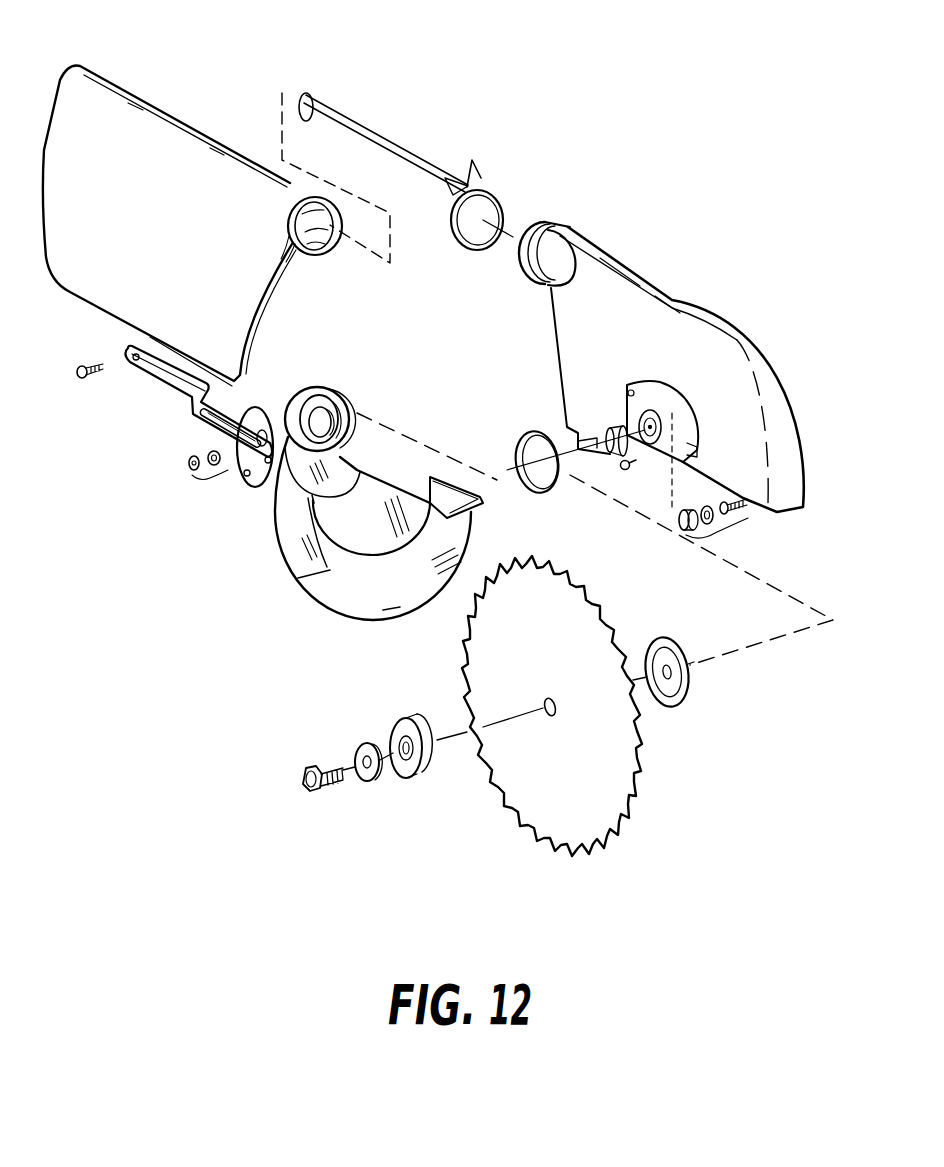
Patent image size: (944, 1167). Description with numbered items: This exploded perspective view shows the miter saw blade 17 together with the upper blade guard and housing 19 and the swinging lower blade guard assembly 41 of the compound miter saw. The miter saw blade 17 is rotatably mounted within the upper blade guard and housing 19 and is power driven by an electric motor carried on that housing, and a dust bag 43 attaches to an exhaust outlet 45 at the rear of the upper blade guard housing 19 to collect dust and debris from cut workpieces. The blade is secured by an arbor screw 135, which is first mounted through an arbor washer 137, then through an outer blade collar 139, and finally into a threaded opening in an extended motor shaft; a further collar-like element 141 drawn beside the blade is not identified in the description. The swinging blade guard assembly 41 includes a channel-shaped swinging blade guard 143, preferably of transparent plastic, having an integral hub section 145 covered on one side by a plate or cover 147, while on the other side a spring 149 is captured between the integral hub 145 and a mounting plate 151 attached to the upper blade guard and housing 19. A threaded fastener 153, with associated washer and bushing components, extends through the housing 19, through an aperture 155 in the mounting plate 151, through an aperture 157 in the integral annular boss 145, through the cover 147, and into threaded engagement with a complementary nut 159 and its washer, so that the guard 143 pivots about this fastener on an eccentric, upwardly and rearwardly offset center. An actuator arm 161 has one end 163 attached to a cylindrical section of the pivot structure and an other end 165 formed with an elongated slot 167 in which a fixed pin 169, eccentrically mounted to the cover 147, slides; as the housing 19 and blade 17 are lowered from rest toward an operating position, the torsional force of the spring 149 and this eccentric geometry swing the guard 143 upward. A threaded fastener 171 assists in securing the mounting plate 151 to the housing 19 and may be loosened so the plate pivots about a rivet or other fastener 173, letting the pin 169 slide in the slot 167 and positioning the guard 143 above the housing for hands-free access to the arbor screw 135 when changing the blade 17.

The miter saw blade 17 is at (607, 780).
The upper blade guard and housing 19 is at (676, 285).
The swinging lower blade guard assembly 41 is at (261, 592).
The dust bag 43 is at (150, 165).
The exhaust outlet 45 is at (548, 226).
The arbor screw 135 is at (330, 782).
The arbor washer 137 is at (370, 780).
The outer blade collar 139 is at (418, 777).
The outer blade flange 141 is at (687, 697).
The channel-shaped swinging blade guard 143 is at (293, 533).
The integral hub section 145 is at (323, 390).
The plate or cover 147 is at (253, 413).
The spring 149 is at (533, 430).
The mounting plate 151 is at (665, 413).
The threaded fastener 153 is at (723, 540).
The aperture 155 is at (617, 443).
The aperture 157 is at (280, 440).
The complementary nut 159 is at (213, 486).
The actuator arm 161 is at (183, 387).
The one end of actuator arm 163 is at (132, 365).
The other end of actuator arm 165 is at (268, 428).
The elongated slot 167 is at (218, 405).
The fixed pin 169 is at (261, 478).
The threaded fastener 171 is at (630, 470).
The rivet or other fastener 173 is at (697, 323).